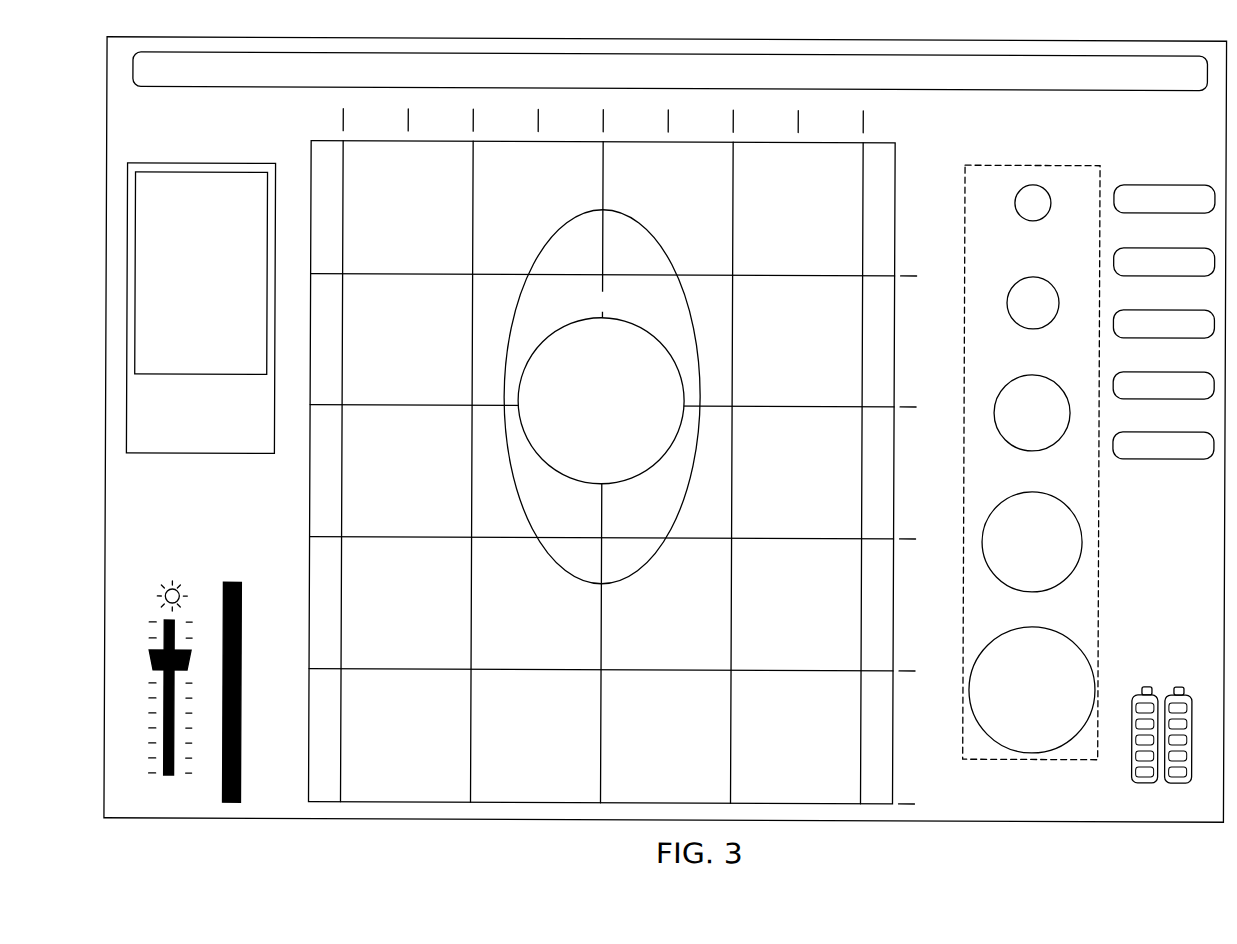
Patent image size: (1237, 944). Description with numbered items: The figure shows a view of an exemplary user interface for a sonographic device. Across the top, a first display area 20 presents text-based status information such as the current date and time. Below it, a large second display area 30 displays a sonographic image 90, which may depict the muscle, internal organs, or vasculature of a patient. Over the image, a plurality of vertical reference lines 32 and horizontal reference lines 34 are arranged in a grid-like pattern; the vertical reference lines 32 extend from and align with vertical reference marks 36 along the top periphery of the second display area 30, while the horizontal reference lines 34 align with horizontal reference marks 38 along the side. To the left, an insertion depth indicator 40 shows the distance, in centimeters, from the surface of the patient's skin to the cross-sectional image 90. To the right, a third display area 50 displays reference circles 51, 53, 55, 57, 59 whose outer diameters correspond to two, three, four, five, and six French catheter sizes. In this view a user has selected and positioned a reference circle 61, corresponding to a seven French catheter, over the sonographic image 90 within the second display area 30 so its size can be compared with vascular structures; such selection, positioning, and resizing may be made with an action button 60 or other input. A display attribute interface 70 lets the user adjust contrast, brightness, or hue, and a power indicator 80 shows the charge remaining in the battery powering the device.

The first display area 20 is at (201, 54).
The second display area 30 is at (608, 447).
The vertical reference lines 32 is at (339, 722).
The horizontal reference lines 34 is at (329, 540).
The vertical reference marks 36 is at (537, 124).
The horizontal reference marks 38 is at (899, 539).
The insertion depth indicator 40 is at (159, 149).
The third display area 50 is at (1020, 441).
The reference circle 51 is at (1056, 182).
The reference circle 53 is at (1006, 271).
The reference circle 55 is at (992, 384).
The reference circle 57 is at (996, 491).
The reference circle 59 is at (991, 624).
The action button 60 is at (1164, 322).
The reference circle 61 is at (672, 358).
The display attribute interface 70 is at (199, 559).
The power indicator 80 is at (1158, 675).
The sonographic image 90 is at (669, 231).